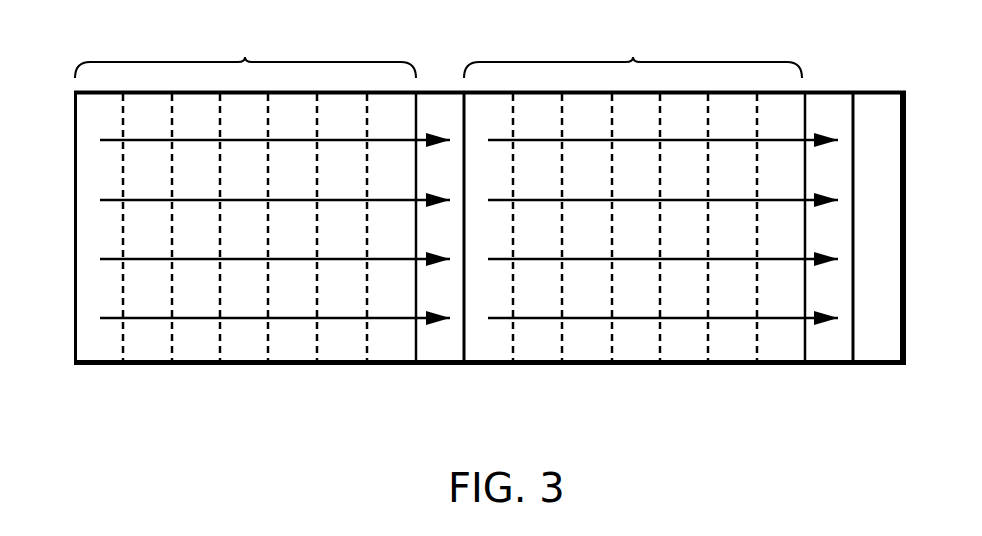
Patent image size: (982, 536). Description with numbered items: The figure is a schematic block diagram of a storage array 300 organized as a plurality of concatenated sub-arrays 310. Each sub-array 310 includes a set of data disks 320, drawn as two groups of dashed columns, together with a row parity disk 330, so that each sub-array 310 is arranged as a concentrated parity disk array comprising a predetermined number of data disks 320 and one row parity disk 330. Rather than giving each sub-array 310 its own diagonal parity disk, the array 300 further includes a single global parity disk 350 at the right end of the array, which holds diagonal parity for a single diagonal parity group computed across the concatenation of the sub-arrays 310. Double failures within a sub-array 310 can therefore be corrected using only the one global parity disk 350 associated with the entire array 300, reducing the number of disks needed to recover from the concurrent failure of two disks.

The storage array 300 is at (456, 217).
The sub-array 310 is at (430, 231).
The data disks 320 is at (142, 221).
The row parity disk 330 is at (832, 110).
The global parity disk 350 is at (878, 181).